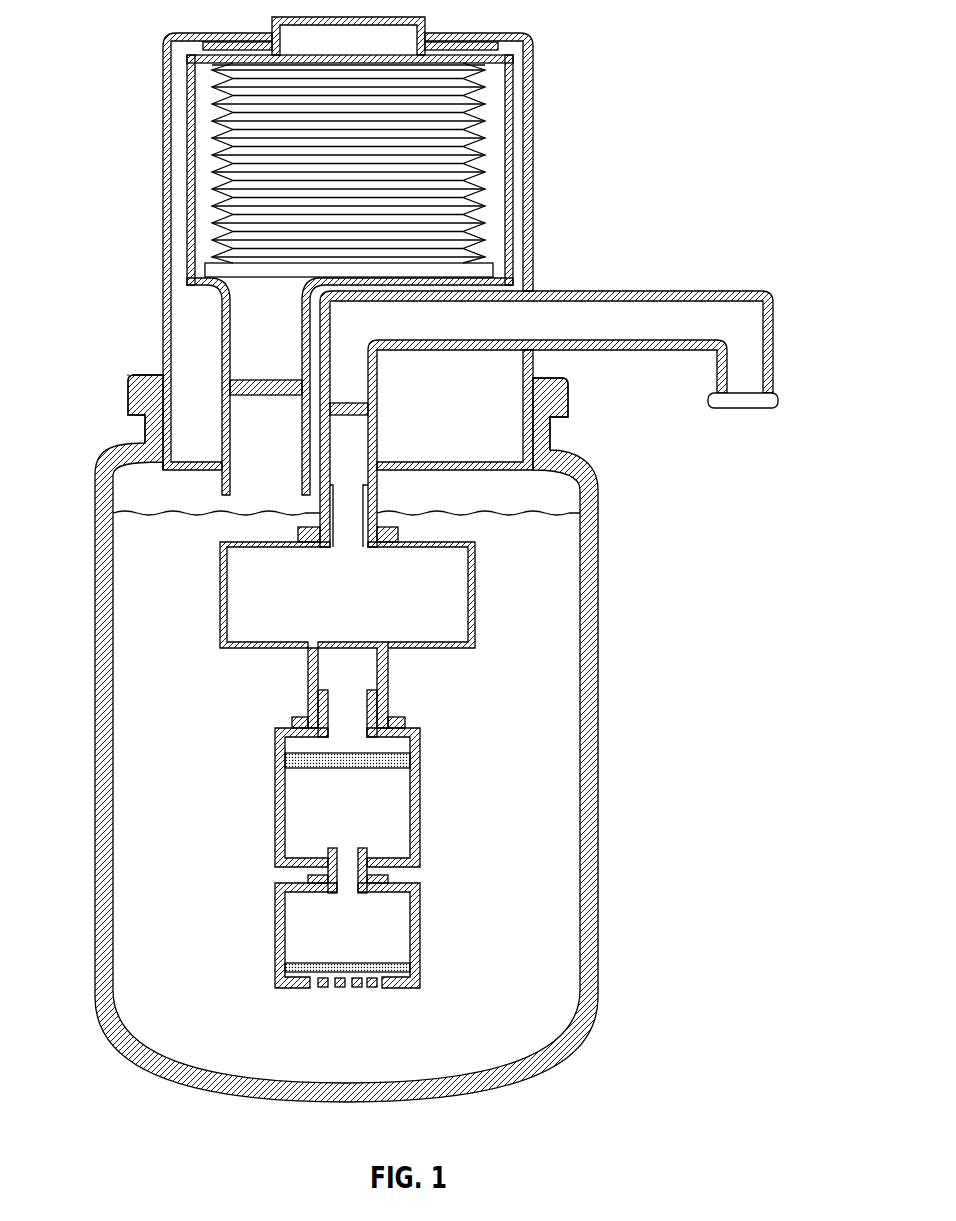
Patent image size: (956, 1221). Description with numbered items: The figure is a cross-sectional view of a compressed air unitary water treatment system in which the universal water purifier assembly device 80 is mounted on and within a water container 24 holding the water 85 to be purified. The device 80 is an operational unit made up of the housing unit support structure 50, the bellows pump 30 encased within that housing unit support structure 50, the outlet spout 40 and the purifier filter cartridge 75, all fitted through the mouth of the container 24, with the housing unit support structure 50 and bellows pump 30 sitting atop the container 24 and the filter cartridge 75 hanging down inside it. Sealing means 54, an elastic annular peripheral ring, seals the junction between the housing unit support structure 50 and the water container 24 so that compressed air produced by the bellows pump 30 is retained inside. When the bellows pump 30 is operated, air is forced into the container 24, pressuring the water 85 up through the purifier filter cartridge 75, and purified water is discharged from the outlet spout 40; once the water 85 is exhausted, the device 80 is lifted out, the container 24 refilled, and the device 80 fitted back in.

The water container 24 is at (603, 645).
The bellows pump 30 is at (514, 160).
The outlet spout 40 is at (597, 291).
The housing unit support structure 50 is at (164, 146).
The sealing means 54 is at (568, 398).
The purifier filter cartridge 75 is at (488, 539).
The universal water purifier assembly device 80 is at (770, 18).
The water 85 is at (132, 848).